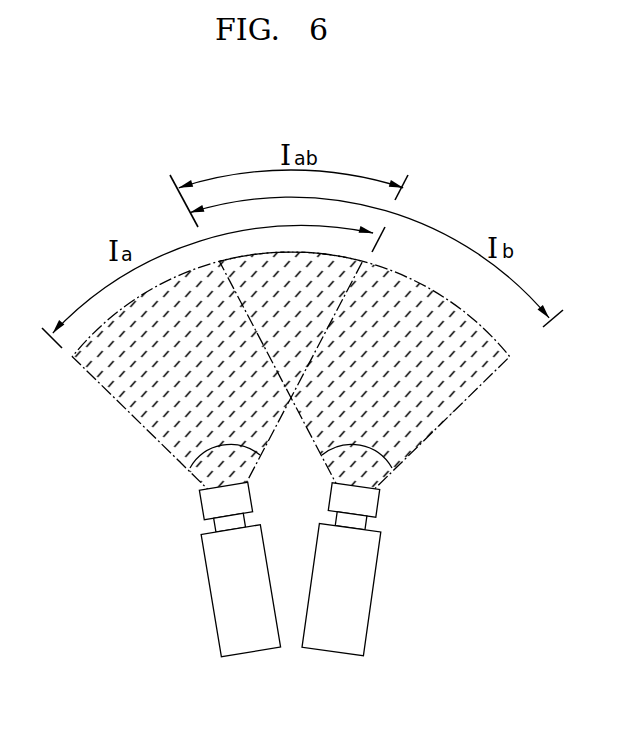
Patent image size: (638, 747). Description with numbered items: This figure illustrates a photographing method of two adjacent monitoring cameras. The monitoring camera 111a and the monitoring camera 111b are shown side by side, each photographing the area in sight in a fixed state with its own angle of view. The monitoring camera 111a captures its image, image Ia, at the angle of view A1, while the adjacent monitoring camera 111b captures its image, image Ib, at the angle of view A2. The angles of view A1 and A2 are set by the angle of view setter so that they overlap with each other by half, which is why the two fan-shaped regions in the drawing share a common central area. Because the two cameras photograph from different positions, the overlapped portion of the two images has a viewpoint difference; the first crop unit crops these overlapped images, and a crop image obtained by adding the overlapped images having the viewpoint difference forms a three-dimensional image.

The monitoring camera 111a is at (251, 652).
The monitoring camera 111b is at (331, 652).
The angle of view A1 is at (225, 443).
The angle of view A2 is at (357, 443).